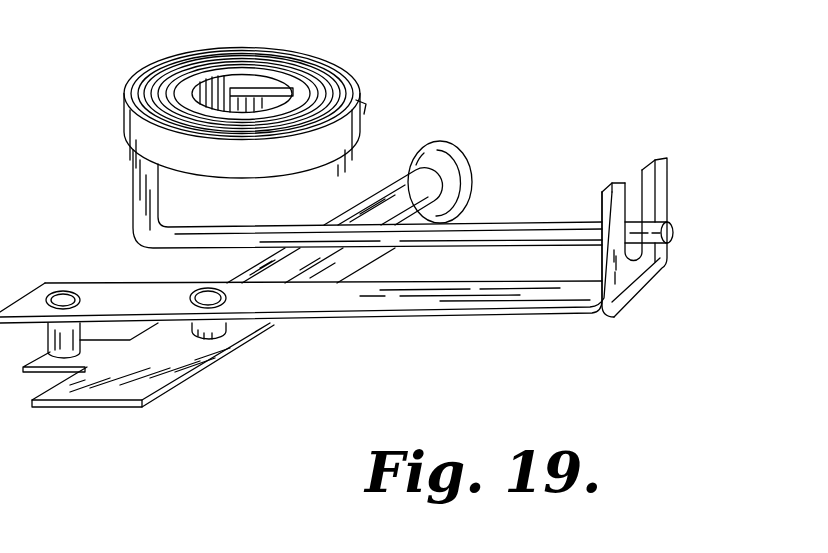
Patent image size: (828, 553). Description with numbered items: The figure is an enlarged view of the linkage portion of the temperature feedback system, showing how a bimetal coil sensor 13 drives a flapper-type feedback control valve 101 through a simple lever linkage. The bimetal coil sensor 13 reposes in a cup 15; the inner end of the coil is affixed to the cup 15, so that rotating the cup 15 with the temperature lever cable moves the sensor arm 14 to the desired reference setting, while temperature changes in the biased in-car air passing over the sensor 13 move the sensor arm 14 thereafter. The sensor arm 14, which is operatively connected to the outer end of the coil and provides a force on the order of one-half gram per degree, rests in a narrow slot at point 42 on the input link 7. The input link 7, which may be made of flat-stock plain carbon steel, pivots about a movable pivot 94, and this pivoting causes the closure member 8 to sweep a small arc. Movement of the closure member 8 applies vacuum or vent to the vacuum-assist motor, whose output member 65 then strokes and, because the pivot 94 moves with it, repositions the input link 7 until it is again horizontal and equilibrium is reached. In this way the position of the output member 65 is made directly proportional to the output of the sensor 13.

The input link 7 is at (488, 318).
The closure member 8 is at (254, 270).
The bimetal coil sensor 13 is at (308, 58).
The sensor arm 14 is at (498, 220).
The cup 15 is at (368, 105).
The slot point 42 is at (652, 210).
The output member 65 is at (188, 376).
The movable pivot 94 is at (62, 296).
The feedback control valve of the flapper type 101 is at (470, 162).